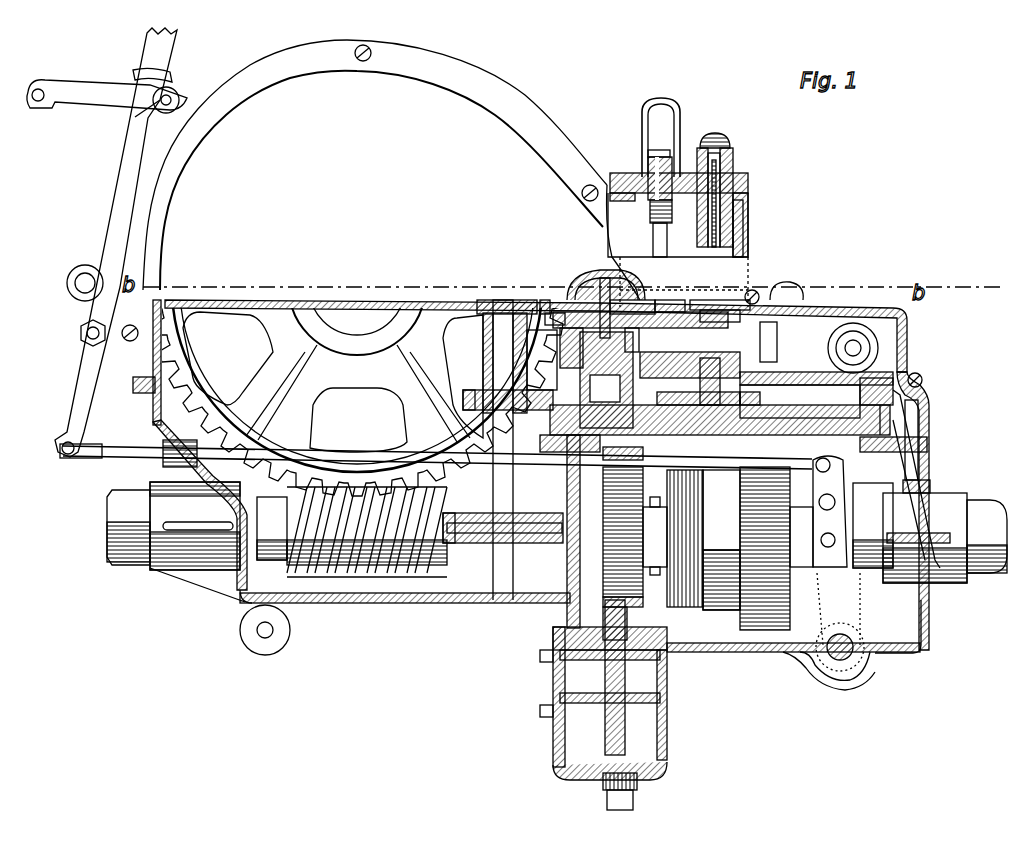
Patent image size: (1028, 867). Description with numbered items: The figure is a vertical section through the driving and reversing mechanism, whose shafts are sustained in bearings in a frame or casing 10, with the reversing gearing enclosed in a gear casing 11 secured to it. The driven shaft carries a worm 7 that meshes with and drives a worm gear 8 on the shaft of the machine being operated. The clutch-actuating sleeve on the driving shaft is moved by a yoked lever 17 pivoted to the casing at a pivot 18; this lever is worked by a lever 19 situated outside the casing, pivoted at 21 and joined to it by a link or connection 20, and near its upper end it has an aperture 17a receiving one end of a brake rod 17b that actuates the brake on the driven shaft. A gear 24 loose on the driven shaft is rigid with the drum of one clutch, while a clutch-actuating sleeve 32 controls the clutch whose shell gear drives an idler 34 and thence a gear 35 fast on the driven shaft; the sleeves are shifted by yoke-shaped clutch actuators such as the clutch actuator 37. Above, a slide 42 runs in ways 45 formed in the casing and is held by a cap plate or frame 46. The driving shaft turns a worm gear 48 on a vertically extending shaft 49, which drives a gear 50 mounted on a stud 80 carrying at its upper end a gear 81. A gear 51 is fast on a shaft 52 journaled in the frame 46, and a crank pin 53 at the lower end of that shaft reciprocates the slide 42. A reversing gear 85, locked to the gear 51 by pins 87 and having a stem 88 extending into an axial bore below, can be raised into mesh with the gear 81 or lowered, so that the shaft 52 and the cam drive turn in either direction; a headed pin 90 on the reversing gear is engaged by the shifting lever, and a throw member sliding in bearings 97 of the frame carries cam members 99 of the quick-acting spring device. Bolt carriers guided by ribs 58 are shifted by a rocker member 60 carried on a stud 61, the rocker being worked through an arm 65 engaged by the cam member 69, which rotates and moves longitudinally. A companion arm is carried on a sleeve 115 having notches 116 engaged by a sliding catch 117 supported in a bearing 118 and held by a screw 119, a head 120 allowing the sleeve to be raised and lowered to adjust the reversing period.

The worm 7 is at (328, 580).
The worm gear 8 is at (180, 414).
The casing 10 is at (928, 460).
The gear casing 11 is at (903, 315).
The yoked lever 17 is at (860, 518).
The aperture 17a is at (830, 515).
The brake rod 17b is at (833, 463).
The pivot 18 is at (868, 672).
The lever 19 is at (118, 185).
The link 20 is at (352, 470).
The pivot 21 is at (80, 333).
The gear 24 is at (820, 680).
The clutch-actuating sleeve 32 is at (688, 610).
The idler 34 is at (640, 755).
The gear 35 is at (562, 620).
The clutch actuator 37 is at (728, 605).
The slide 42 is at (912, 400).
The ways 45 is at (925, 430).
The cap plate 46 is at (893, 342).
The worm gear 48 is at (460, 580).
The vertically-extending shaft 49 is at (490, 580).
The gear 50 is at (475, 395).
The gear 51 is at (537, 303).
The shaft 52 is at (578, 272).
The crank pin 53 is at (580, 440).
The ribs 58 is at (805, 345).
The rocker member 60 is at (760, 397).
The stud 61 is at (720, 315).
The arm 65 is at (700, 300).
The cam member 69 is at (640, 185).
The stud 80 is at (503, 312).
The gear 81 is at (478, 305).
The reversing gear 85 is at (600, 278).
The pins 87 is at (553, 298).
The stem 88 is at (640, 300).
The headed pin 90 is at (650, 298).
The bearings 97 is at (790, 290).
The cam members 99 is at (758, 292).
The sleeve 115 is at (733, 165).
The notches 116 is at (745, 210).
The sliding catch 117 is at (678, 170).
The bearing 118 is at (735, 185).
The screw 119 is at (690, 160).
The head 120 is at (728, 135).